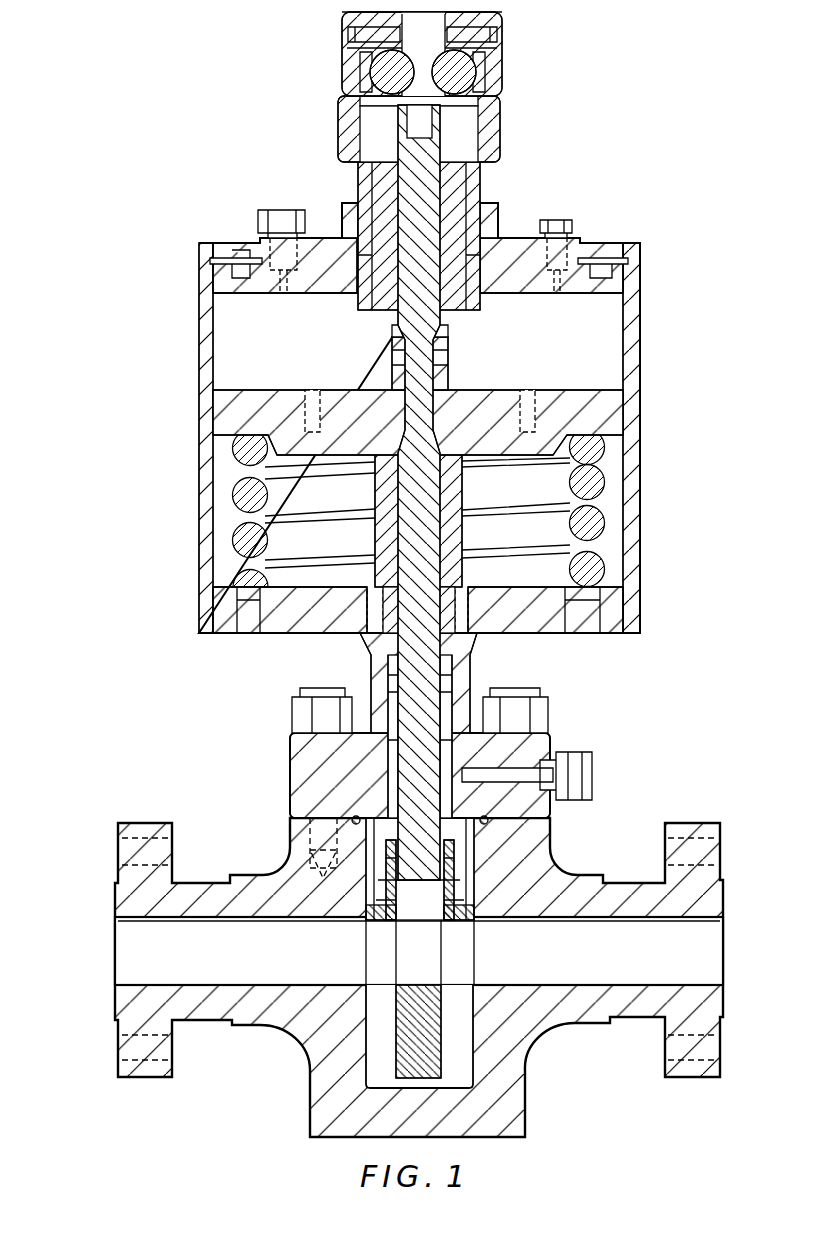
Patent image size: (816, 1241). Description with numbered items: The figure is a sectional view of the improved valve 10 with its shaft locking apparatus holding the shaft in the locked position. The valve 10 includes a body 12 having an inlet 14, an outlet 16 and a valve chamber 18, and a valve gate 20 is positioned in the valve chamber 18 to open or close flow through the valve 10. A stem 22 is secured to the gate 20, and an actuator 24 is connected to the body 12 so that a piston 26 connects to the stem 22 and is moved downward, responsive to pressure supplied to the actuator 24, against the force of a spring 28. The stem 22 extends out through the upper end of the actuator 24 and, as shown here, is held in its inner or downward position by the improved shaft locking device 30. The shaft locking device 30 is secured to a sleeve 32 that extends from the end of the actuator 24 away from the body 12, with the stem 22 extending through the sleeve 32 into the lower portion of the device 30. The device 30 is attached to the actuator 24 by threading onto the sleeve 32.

The valve 10 is at (383, 597).
The body 12 is at (311, 1097).
The inlet 14 is at (156, 985).
The outlet 16 is at (525, 980).
The valve chamber 18 is at (461, 1040).
The valve gate 20 is at (436, 1074).
The stem 22 is at (397, 765).
The actuator 24 is at (640, 578).
The piston 26 is at (630, 392).
The spring 28 is at (603, 445).
The shaft locking device 30 is at (500, 120).
The sleeve 32 is at (482, 197).